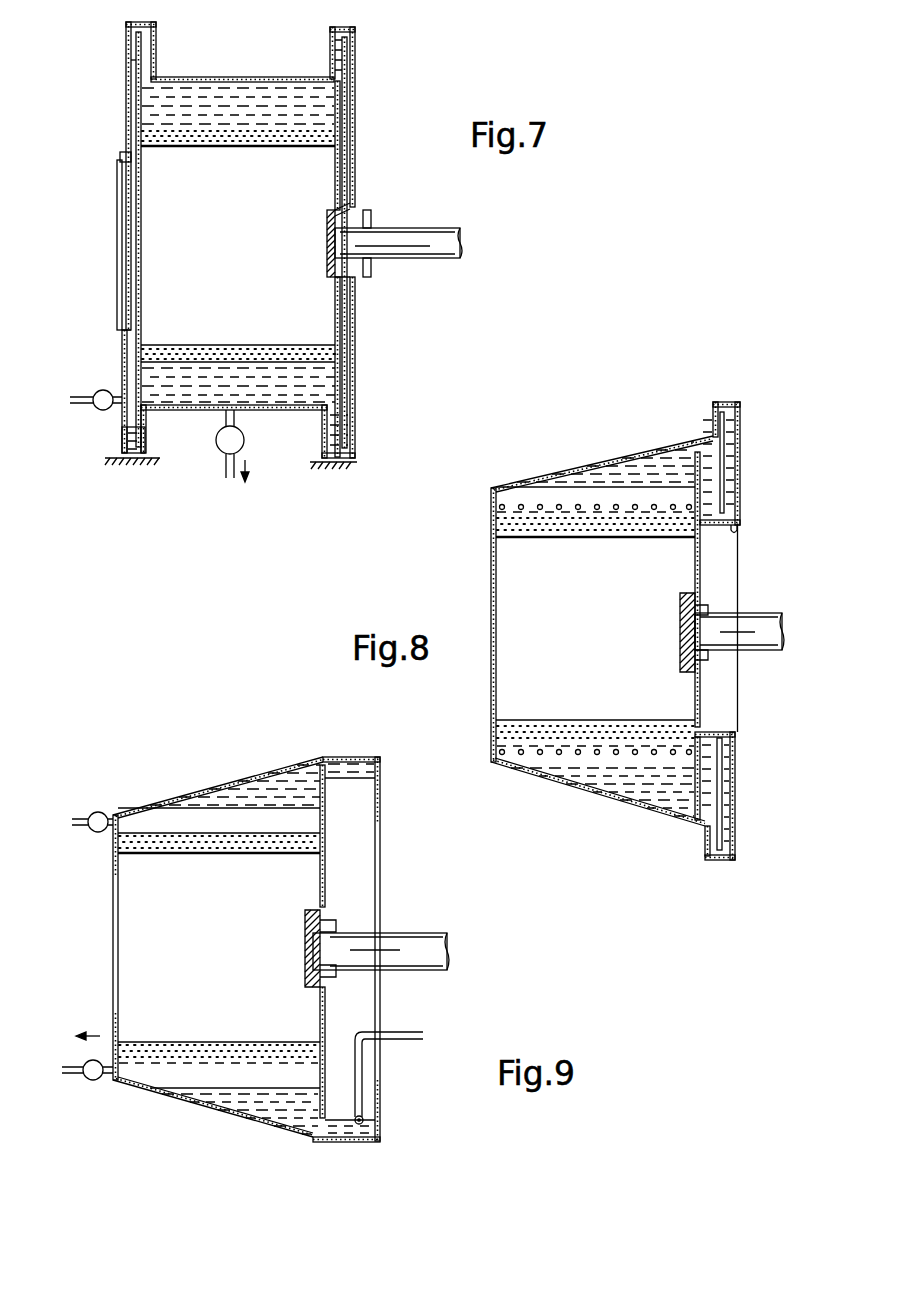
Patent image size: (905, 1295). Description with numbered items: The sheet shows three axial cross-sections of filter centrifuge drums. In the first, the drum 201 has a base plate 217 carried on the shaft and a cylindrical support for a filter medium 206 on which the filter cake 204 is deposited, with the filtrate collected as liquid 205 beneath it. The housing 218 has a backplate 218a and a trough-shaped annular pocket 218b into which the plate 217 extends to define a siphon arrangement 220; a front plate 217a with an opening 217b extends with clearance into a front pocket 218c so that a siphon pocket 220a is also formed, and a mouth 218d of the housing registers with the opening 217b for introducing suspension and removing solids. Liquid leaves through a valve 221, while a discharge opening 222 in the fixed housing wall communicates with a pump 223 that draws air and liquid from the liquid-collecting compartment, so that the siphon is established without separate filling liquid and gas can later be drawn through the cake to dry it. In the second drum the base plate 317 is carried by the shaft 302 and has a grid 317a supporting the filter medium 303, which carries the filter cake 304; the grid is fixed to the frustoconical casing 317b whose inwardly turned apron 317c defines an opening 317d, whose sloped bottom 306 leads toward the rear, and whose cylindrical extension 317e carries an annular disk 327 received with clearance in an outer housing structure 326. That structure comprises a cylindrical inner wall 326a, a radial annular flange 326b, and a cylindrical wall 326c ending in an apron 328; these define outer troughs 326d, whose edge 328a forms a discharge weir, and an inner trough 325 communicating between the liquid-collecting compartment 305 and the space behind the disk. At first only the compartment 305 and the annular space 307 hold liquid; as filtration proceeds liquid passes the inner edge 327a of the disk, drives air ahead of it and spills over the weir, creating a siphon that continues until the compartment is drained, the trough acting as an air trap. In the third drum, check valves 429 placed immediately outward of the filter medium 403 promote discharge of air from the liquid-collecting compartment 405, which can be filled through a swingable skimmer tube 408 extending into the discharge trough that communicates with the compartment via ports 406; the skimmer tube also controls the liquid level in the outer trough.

In FIG. 7, the drum 201 is at (357, 170).
In FIG. 7, the filter cake 204 is at (192, 350).
In FIG. 7, the lower liquid 205 is at (340, 420).
In FIG. 7, the filter medium 206 is at (340, 360).
In FIG. 7, the base plate 217 is at (356, 85).
In FIG. 7, the front plate 217a is at (134, 153).
In FIG. 7, the opening 217b is at (134, 312).
In FIG. 7, the housing 218 is at (220, 77).
In FIG. 7, the backplate 218a is at (347, 308).
In FIG. 7, the annular pocket 218b is at (340, 25).
In FIG. 7, the pocket 218c is at (124, 440).
In FIG. 7, the mouth 218d is at (120, 162).
In FIG. 7, the siphon arrangement 220 is at (355, 453).
In FIG. 7, the siphon pocket 220a is at (132, 22).
In FIG. 7, the valve 221 is at (96, 411).
In FIG. 7, the discharge opening 222 is at (222, 408).
In FIG. 7, the pump 223 is at (222, 453).
In FIG. 8, the shaft 302 is at (757, 625).
In FIG. 8, the filter medium 303 is at (522, 765).
In FIG. 8, the filter material layer 304 is at (550, 727).
In FIG. 8, the liquid-collecting compartment 305 is at (567, 780).
In FIG. 8, the sloped bottom 306 is at (697, 826).
In FIG. 8, the annular space 307 is at (712, 790).
In FIG. 8, the base plate 317 is at (702, 595).
In FIG. 8, the grid 317a is at (492, 506).
In FIG. 8, the casing 317b is at (524, 480).
In FIG. 8, the apron 317c is at (492, 554).
In FIG. 8, the opening 317d is at (491, 700).
In FIG. 8, the cylindrical extension 317e is at (710, 437).
In FIG. 8, the inner trough 325 is at (712, 738).
In FIG. 8, the outer housing structure 326 is at (738, 816).
In FIG. 8, the cylindrical inner wall 326a is at (738, 533).
In FIG. 8, the radial annular flange 326b is at (741, 462).
In FIG. 8, the cylindrical wall 326c is at (738, 402).
In FIG. 8, the outer trough 326d is at (735, 848).
In FIG. 8, the annular disk 327 is at (722, 757).
In FIG. 8, the inner edge 327a is at (732, 745).
In FIG. 8, the apron 328 is at (706, 845).
In FIG. 8, the edge 328a is at (703, 830).
In FIG. 9, the filter medium 403 is at (178, 1058).
In FIG. 9, the liquid-collecting compartment 405 is at (182, 1075).
In FIG. 9, the ports 406 is at (318, 1132).
In FIG. 9, the skimmer tube 408 is at (410, 1032).
In FIG. 9, the check valves 429 is at (96, 834).